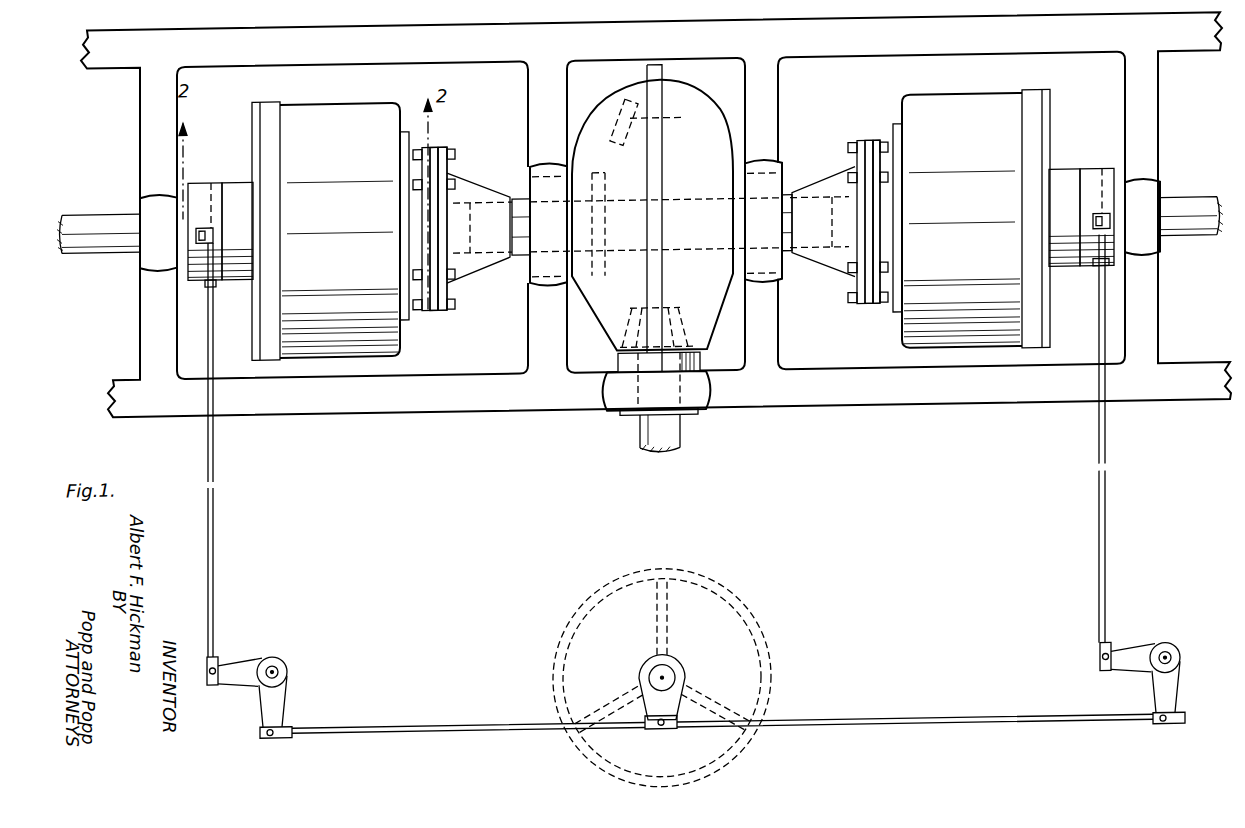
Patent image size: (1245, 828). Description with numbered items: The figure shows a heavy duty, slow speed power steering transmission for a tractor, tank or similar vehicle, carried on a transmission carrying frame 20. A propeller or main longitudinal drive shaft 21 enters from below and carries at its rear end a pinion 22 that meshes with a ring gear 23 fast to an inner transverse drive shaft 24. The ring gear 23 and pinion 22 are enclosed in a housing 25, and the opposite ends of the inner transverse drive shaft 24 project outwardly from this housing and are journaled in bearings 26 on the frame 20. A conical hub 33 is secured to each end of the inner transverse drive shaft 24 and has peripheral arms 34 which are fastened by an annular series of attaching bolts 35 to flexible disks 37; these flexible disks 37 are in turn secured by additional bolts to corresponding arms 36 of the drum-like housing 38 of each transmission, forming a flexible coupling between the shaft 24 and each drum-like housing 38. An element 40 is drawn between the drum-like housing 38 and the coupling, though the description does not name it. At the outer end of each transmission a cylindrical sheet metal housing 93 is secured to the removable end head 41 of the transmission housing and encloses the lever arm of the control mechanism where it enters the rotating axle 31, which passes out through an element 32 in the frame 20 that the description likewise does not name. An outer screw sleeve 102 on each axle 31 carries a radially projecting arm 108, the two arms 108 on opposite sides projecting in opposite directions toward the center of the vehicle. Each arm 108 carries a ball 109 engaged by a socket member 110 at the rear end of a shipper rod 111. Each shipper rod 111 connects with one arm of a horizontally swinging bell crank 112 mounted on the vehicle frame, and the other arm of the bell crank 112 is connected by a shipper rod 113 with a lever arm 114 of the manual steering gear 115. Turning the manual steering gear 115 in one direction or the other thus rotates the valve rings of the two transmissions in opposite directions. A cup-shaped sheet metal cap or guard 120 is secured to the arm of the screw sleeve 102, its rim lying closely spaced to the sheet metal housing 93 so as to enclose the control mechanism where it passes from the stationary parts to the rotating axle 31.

The transmission carrying frame 20 is at (887, 410).
The main longitudinal drive shaft 21 is at (652, 450).
The pinion 22 is at (688, 318).
The ring gear 23 is at (666, 119).
The inner transverse drive shaft 24 is at (708, 184).
The housing 25 is at (730, 90).
The bearings 26 is at (548, 165).
The axle 31 is at (99, 206).
The axle bearing 32 is at (158, 262).
The conical hub 33 is at (482, 184).
The peripheral arms 34 is at (440, 144).
The attaching bolts 35 is at (455, 284).
The arms 36 is at (405, 316).
The flexible disks 37 is at (442, 308).
The drum-like housing 38 is at (340, 88).
The motor end plate 40 is at (405, 128).
The removable end head 41 is at (252, 124).
The cylindrical sheet metal housing 93 is at (220, 273).
The outer screw sleeve 102 is at (1108, 274).
The radially projecting arm 108 is at (194, 176).
The ball 109 is at (211, 178).
The socket member 110 is at (213, 232).
The shipper rod 111 is at (215, 461).
The bell crank 112 is at (249, 656).
The shipper rod 113 is at (478, 709).
The lever arm 114 is at (658, 704).
The manual steering gear 115 is at (680, 568).
The cup-shaped sheet metal cap or guard 120 is at (213, 280).